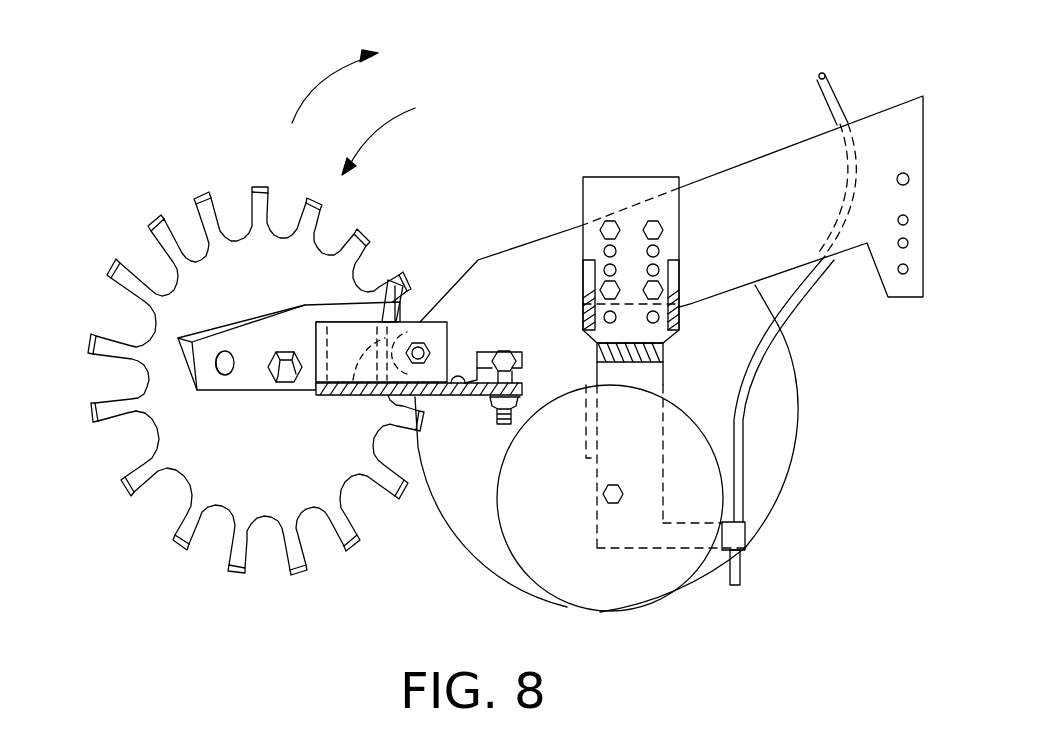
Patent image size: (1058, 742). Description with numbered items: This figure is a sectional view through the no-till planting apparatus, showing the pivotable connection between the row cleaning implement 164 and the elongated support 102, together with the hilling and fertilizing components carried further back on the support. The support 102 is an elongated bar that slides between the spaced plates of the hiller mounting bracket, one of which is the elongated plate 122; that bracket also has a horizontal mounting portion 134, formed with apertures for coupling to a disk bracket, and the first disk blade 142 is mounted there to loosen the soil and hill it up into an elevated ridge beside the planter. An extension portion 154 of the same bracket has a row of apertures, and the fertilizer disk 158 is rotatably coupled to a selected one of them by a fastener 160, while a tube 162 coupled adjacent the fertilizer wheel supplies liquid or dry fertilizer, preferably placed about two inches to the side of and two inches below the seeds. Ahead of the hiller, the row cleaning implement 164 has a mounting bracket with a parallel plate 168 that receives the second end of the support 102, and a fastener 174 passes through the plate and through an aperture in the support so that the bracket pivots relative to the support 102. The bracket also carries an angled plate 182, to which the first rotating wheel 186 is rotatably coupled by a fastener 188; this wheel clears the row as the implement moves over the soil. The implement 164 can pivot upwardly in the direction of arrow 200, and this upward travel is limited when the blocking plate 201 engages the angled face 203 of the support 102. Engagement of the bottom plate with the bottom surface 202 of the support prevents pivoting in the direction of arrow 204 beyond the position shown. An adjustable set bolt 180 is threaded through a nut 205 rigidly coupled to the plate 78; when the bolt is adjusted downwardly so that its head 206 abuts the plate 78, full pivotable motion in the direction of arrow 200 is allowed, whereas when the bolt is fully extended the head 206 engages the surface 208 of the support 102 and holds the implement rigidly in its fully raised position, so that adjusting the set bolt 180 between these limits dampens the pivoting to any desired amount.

The plate 78 is at (433, 392).
The elongated support 102 is at (743, 190).
The elongated plate 122 is at (612, 198).
The horizontal mounting portion 134 is at (664, 358).
The first disk blade 142 is at (800, 418).
The extension portion 154 is at (597, 535).
The fertilizer disk 158 is at (610, 588).
The fastener 160 is at (617, 497).
The tube 162 is at (797, 300).
The row cleaning implement 164 is at (242, 362).
The parallel plate 168 is at (390, 295).
The fastener 174 is at (425, 352).
The set bolt 180 is at (518, 372).
The angled plate 182 is at (289, 379).
The first rotating wheel 186 is at (220, 293).
The fastener 188 is at (293, 367).
The arrow 200 is at (320, 88).
The blocking plate 201 is at (357, 392).
The bottom surface 202 is at (467, 380).
The angled face 203 is at (438, 298).
The arrow 204 is at (378, 130).
The nut 205 is at (478, 396).
The head 206 is at (520, 366).
The surface 208 is at (500, 355).